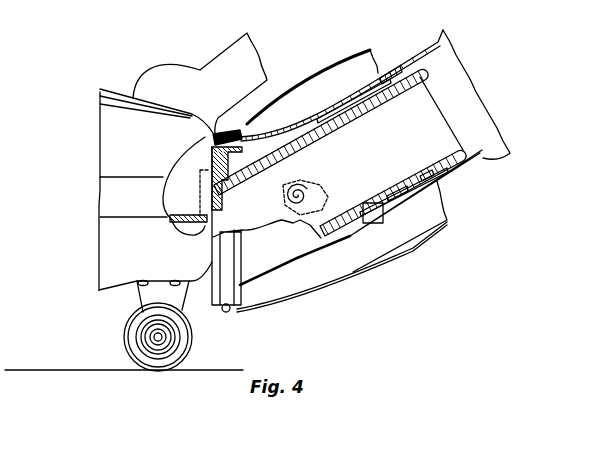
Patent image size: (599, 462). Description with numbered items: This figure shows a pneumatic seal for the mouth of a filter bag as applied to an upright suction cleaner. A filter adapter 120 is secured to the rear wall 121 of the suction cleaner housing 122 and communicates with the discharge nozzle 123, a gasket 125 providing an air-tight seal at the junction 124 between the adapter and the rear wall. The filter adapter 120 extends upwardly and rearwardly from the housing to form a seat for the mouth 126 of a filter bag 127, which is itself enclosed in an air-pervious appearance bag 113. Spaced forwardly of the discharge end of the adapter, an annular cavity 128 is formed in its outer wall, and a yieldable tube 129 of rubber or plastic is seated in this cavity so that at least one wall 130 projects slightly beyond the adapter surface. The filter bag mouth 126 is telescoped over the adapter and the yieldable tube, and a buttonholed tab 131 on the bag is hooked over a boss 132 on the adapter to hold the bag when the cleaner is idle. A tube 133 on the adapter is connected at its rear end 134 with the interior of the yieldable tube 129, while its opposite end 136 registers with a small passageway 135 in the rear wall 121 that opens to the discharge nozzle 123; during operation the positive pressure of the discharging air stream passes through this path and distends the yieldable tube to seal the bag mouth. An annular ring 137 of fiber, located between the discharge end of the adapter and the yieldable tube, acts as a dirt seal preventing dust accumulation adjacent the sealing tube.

The appearance bag 113 is at (332, 60).
The filter adapter 120 is at (270, 268).
The rear wall 121 is at (195, 290).
The suction cleaner housing 122 is at (160, 154).
The discharge nozzle 123 is at (202, 231).
The junction 124 is at (200, 168).
The gasket 125 is at (212, 135).
The mouth 126 is at (437, 187).
The filter bag 127 is at (474, 100).
The annular cavity 128 is at (316, 136).
The yieldable tube 129 is at (396, 204).
The wall 130 is at (400, 192).
The tab 131 is at (284, 184).
The boss 132 is at (302, 195).
The tube 133 is at (243, 143).
The rear end 134 is at (318, 120).
The passageway 135 is at (217, 198).
The end 136 is at (208, 187).
The annular ring 137 is at (390, 80).